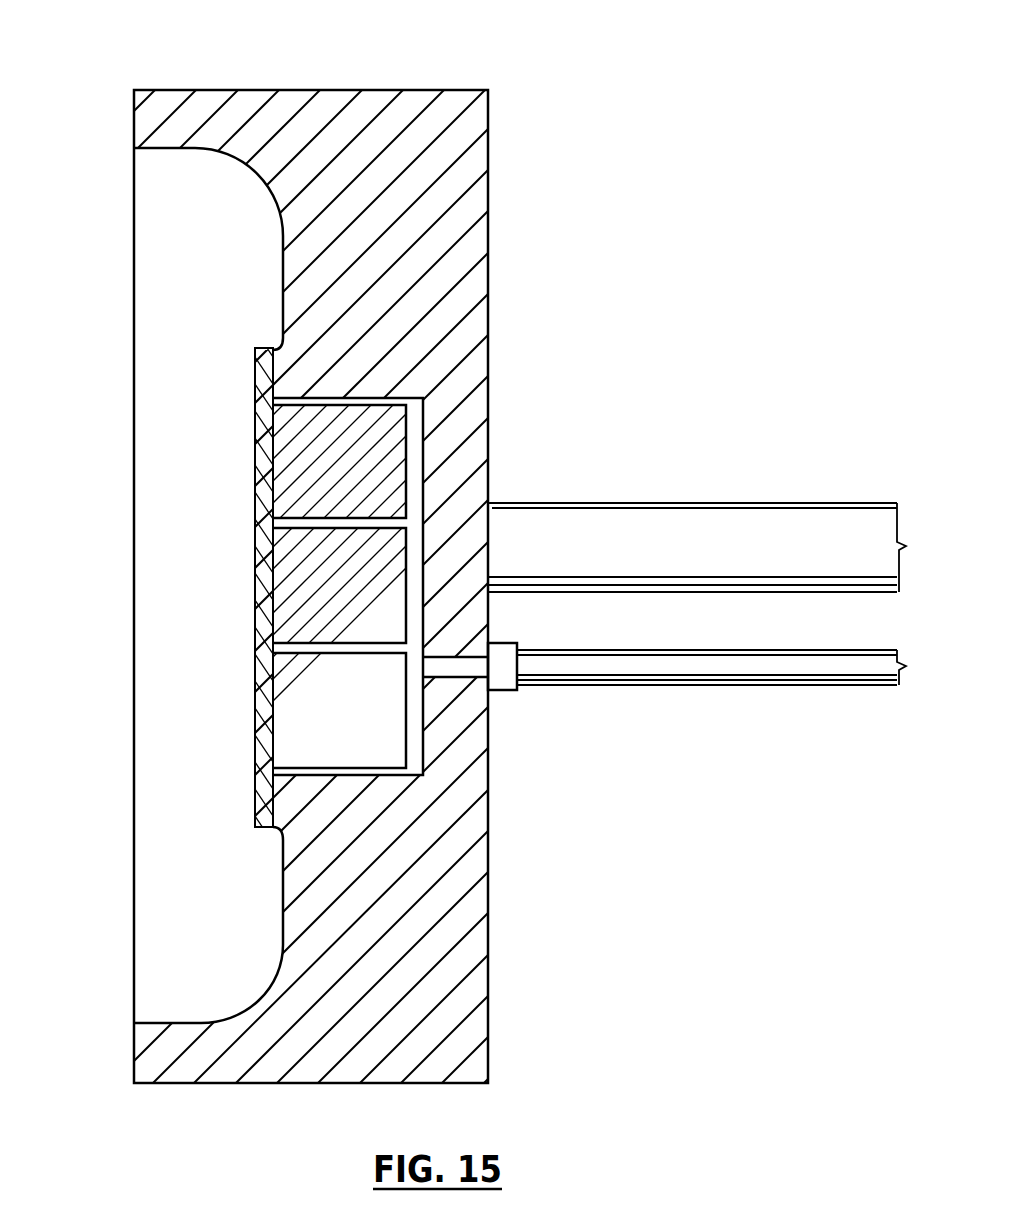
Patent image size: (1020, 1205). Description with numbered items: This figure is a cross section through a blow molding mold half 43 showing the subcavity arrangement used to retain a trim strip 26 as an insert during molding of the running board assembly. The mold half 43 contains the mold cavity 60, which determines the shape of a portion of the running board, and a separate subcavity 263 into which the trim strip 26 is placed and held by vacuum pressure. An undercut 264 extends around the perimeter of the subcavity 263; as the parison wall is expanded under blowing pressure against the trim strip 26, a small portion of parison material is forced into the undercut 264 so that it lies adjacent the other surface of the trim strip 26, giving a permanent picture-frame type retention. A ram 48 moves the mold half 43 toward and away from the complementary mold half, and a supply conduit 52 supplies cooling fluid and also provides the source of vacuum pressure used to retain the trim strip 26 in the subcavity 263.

The mold half 43 is at (375, 108).
The mold cavity 60 is at (236, 162).
The undercut 264 is at (277, 350).
The subcavity 263 is at (255, 430).
The trim strip 26 is at (255, 553).
The ram 48 is at (736, 525).
The supply conduit 52 is at (737, 663).